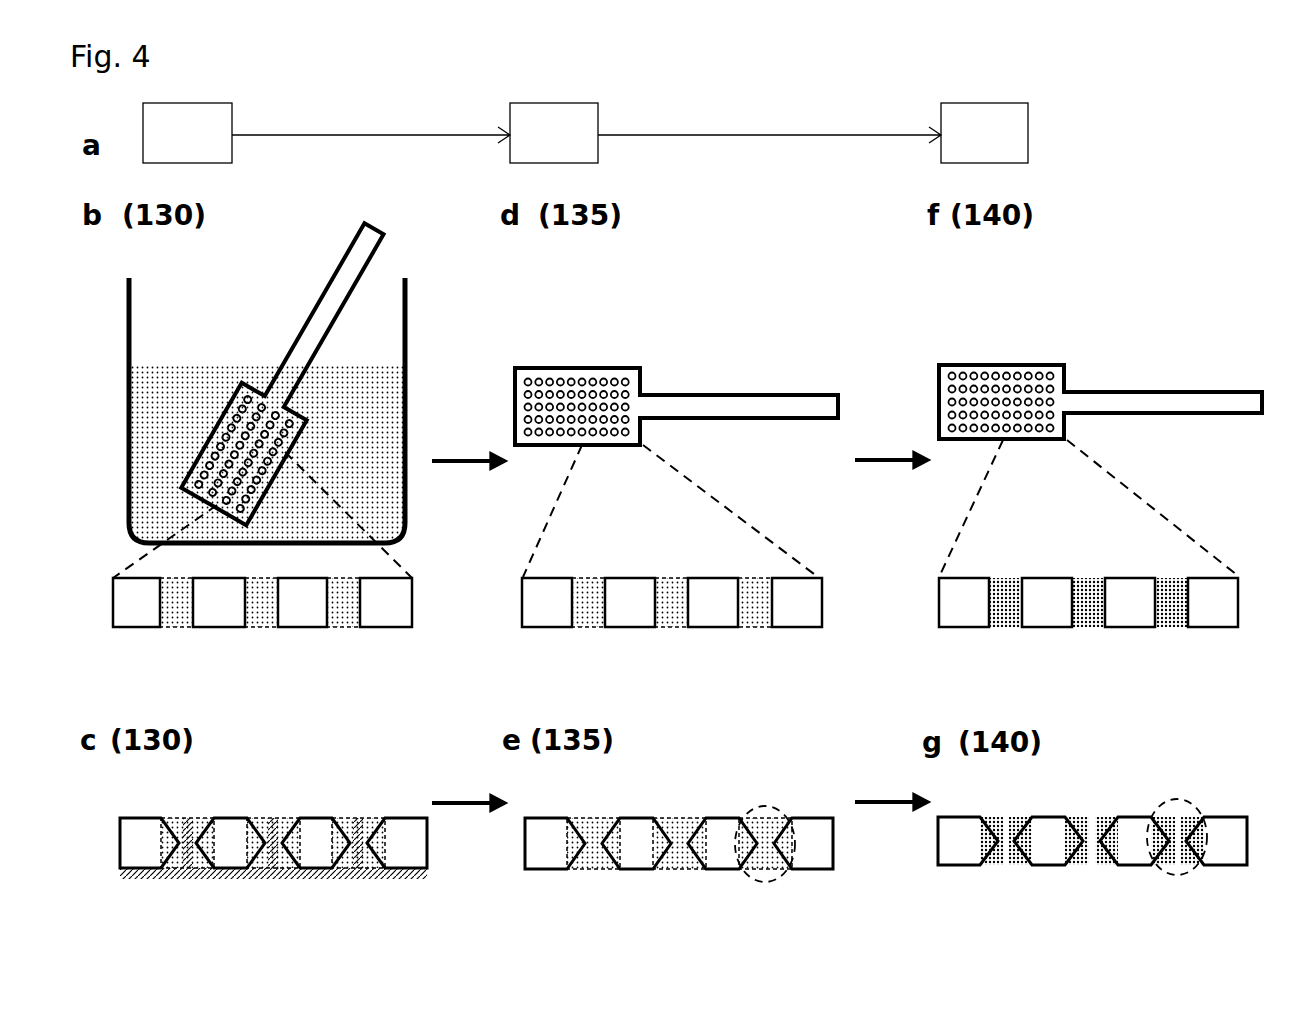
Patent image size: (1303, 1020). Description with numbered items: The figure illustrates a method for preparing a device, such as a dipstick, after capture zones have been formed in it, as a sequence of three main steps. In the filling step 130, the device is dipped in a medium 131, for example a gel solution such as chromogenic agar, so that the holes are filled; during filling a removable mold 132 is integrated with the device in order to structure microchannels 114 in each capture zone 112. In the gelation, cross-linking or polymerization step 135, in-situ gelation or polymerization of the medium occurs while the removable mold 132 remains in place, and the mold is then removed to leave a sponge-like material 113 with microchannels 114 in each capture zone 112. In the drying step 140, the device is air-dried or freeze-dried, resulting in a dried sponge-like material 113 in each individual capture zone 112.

The filling step 130 is at (187, 133).
The gelation, cross-linking or polymerization step 135 is at (554, 133).
The drying step 140 is at (984, 133).
The medium 131 is at (350, 425).
The removable mold 132 is at (360, 817).
The sponge-like material 113 is at (593, 603).
The microchannels 114 is at (678, 837).
The capture zone 112 is at (772, 802).